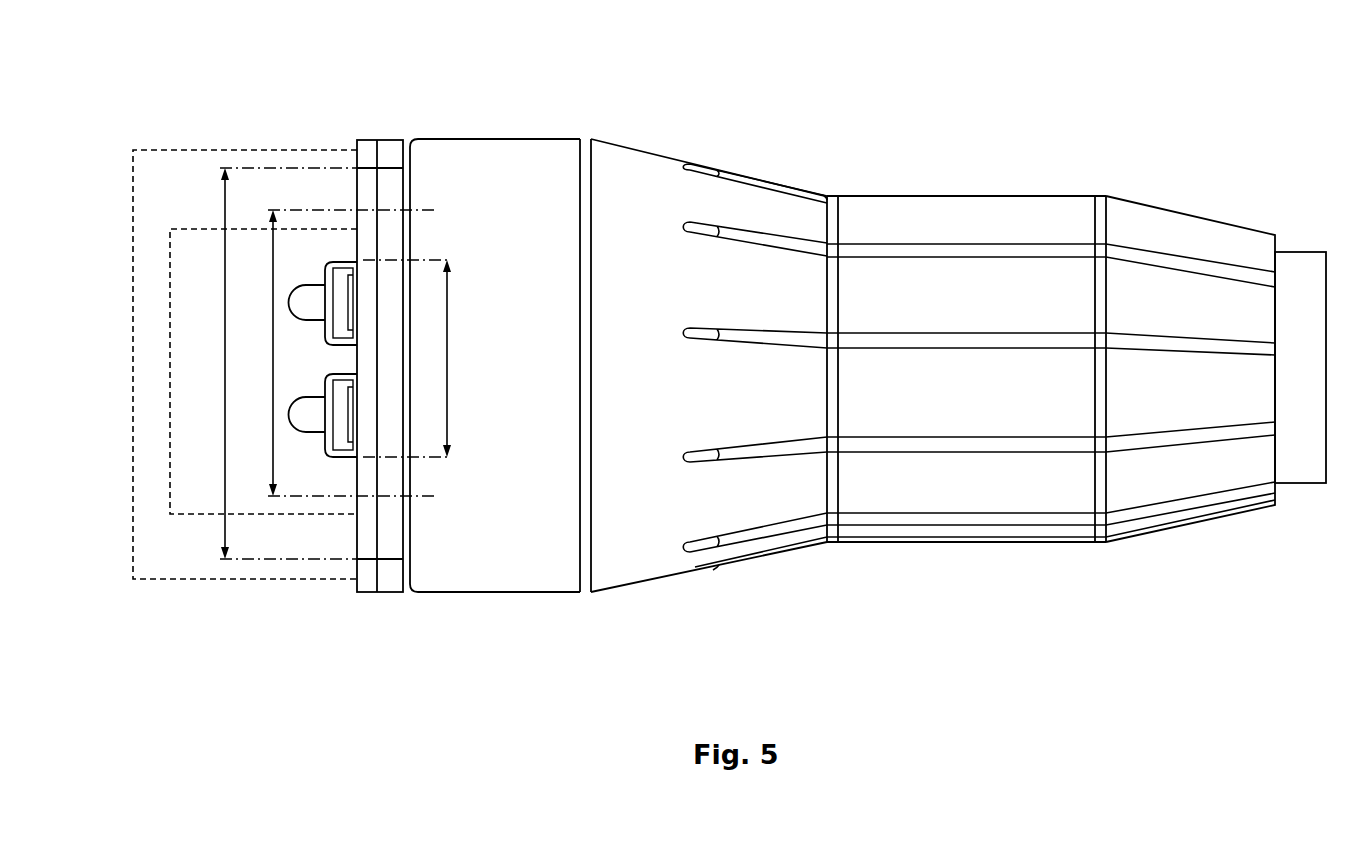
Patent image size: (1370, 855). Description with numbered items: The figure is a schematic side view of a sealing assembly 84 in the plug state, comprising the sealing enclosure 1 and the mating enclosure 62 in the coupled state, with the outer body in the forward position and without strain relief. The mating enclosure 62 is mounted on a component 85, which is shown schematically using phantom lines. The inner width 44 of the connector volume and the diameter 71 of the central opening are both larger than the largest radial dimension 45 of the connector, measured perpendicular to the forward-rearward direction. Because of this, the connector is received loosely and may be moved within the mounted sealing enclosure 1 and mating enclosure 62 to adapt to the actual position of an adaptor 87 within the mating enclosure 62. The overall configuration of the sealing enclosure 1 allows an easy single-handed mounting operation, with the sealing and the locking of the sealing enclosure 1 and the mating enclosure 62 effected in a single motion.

The sealing enclosure 1 is at (841, 306).
The sealing assembly 84 is at (562, 57).
The mating enclosure 62 is at (368, 123).
The component 85 is at (198, 150).
The adaptor 87 is at (188, 516).
The inner width 44 is at (263, 327).
The diameter 71 is at (223, 356).
The largest radial dimension 45 is at (448, 358).